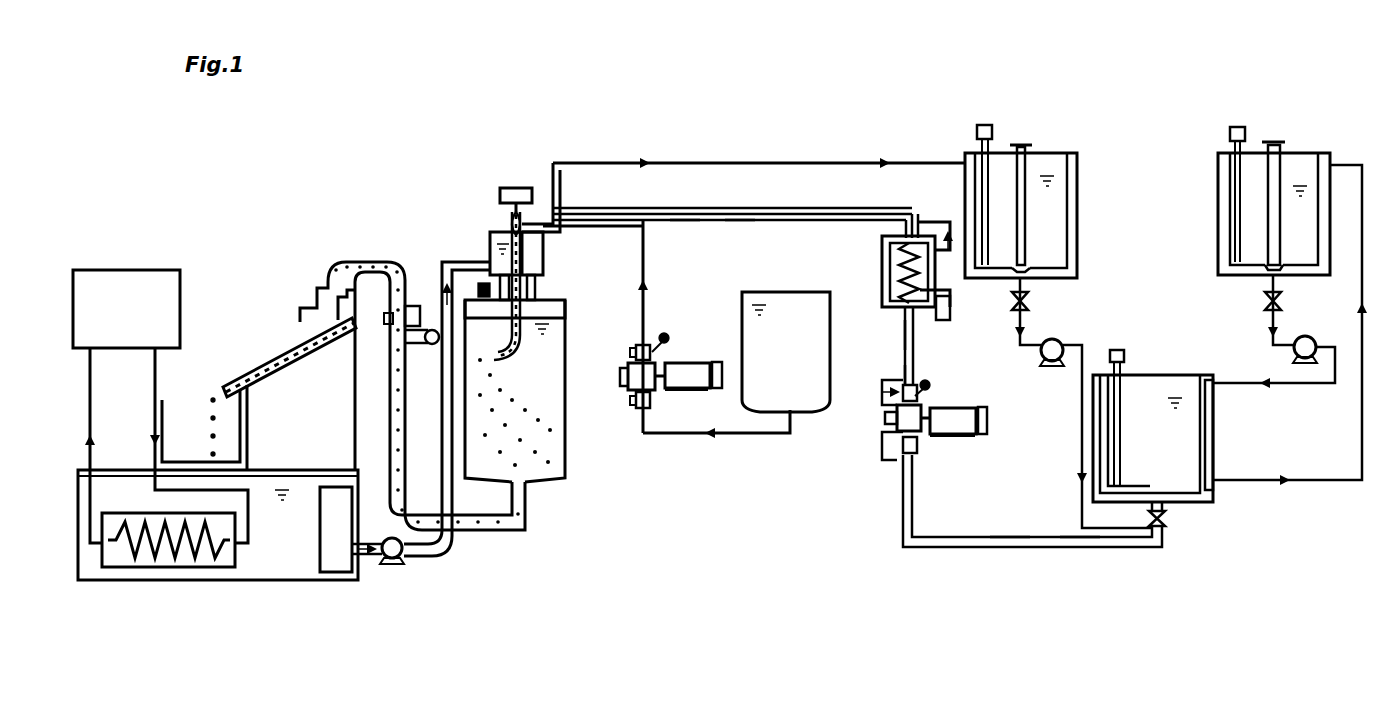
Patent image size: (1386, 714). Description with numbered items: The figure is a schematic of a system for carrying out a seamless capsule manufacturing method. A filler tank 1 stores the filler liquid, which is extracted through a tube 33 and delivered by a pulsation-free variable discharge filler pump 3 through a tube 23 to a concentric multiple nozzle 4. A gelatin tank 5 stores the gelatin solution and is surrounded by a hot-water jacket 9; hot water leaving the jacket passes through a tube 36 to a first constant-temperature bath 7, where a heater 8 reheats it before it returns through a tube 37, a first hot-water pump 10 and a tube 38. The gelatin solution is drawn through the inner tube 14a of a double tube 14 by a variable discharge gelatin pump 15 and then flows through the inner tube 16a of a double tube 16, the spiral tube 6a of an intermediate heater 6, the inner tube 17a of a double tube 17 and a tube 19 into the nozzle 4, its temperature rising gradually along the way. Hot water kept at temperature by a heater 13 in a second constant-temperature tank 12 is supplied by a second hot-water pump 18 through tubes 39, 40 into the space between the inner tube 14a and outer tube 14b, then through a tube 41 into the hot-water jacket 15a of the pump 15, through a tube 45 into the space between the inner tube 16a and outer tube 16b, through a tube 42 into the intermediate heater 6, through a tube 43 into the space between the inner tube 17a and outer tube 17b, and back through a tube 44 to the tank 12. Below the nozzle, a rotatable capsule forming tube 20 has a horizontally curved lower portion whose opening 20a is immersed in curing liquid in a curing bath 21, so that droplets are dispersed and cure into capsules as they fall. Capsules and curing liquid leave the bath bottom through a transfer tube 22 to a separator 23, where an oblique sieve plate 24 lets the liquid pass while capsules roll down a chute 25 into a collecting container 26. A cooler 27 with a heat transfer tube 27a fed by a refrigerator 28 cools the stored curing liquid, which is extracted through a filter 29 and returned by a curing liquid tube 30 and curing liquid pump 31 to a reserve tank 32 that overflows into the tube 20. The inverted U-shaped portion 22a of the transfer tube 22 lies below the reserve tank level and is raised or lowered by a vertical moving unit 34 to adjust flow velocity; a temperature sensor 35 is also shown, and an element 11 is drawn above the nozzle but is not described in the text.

The filler tank 1 is at (738, 361).
The filler pump 3 is at (637, 404).
The concentric multiple nozzle 4 is at (502, 218).
The gelatin tank 5 is at (1214, 420).
The intermediate heater 6 is at (882, 264).
The spiral tube 6a is at (900, 276).
The first constant-temperature bath 7 is at (1218, 182).
The heater 8 is at (1268, 232).
The hot-water jacket 9 is at (1210, 464).
The first hot-water pump 10 is at (1304, 340).
The nozzle drive 11 is at (518, 188).
The second constant-temperature tank 12 is at (1077, 178).
The heater 13 is at (1028, 242).
The double tube 14 is at (948, 555).
The inner tube 14a is at (1007, 549).
The outer tube 14b is at (1080, 549).
The gelatin pump 15 is at (924, 434).
The hot-water jacket 15a is at (886, 427).
The double tube 16 is at (923, 351).
The inner tube 16a is at (900, 337).
The outer tube 16b is at (902, 378).
The double tube 17 is at (824, 210).
The inner tube 17a is at (738, 222).
The outer tube 17b is at (683, 222).
The second hot-water pump 18 is at (1056, 342).
The tube 19 is at (554, 200).
The capsule forming tube 20 is at (534, 288).
The opening 20a is at (513, 354).
The curing bath 21 is at (565, 438).
The transfer tube 22 is at (488, 530).
The inverted U-shaped portion 22a is at (370, 264).
The separator 23 is at (356, 430).
The sieve plate 24 is at (304, 338).
The chute 25 is at (230, 378).
The collecting container 26 is at (155, 436).
The cooler 27 is at (116, 568).
The heat transfer tube 27a is at (197, 568).
The refrigerator 28 is at (180, 290).
The filter 29 is at (319, 570).
The curing liquid tube 30 is at (442, 428).
The curing liquid pump 31 is at (388, 568).
The reserve tank 32 is at (543, 250).
The tube 33 is at (718, 436).
The vertical moving unit 34 is at (422, 322).
The temperature sensor 35 is at (978, 126).
The tube 36 is at (1272, 484).
The tube 37 is at (1265, 316).
The tube 38 is at (1300, 386).
The tube 39 is at (1020, 336).
The tube 40 is at (1082, 440).
The tube 41 is at (878, 460).
The tube 42 is at (950, 306).
The tube 43 is at (926, 220).
The tube 44 is at (783, 160).
The tube 45 is at (880, 398).